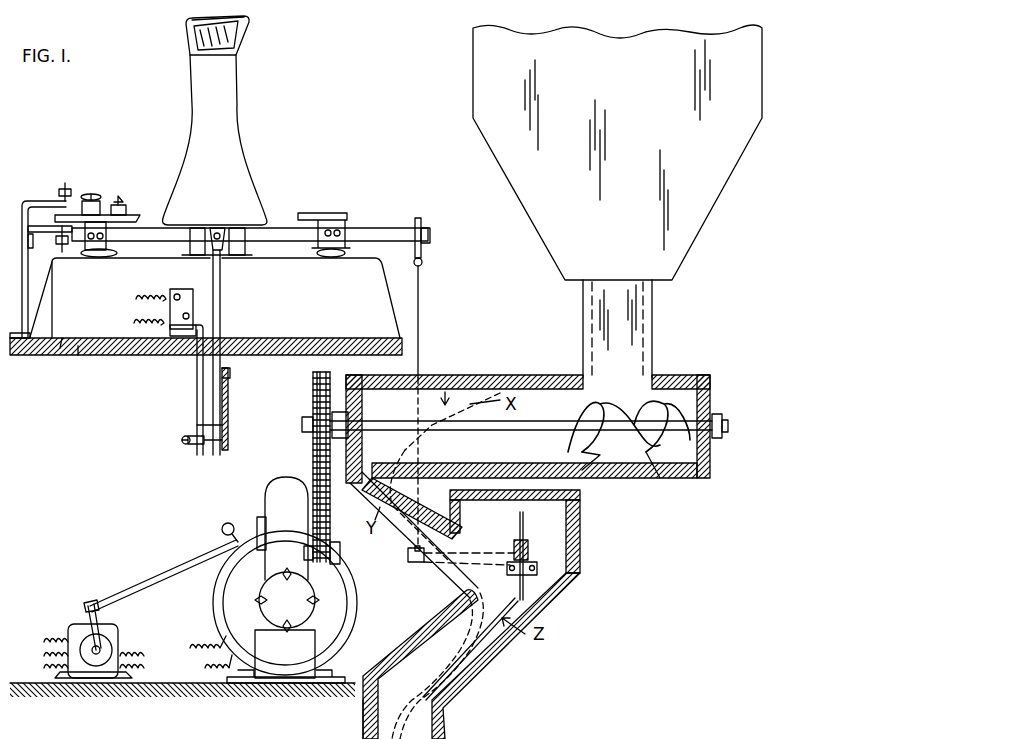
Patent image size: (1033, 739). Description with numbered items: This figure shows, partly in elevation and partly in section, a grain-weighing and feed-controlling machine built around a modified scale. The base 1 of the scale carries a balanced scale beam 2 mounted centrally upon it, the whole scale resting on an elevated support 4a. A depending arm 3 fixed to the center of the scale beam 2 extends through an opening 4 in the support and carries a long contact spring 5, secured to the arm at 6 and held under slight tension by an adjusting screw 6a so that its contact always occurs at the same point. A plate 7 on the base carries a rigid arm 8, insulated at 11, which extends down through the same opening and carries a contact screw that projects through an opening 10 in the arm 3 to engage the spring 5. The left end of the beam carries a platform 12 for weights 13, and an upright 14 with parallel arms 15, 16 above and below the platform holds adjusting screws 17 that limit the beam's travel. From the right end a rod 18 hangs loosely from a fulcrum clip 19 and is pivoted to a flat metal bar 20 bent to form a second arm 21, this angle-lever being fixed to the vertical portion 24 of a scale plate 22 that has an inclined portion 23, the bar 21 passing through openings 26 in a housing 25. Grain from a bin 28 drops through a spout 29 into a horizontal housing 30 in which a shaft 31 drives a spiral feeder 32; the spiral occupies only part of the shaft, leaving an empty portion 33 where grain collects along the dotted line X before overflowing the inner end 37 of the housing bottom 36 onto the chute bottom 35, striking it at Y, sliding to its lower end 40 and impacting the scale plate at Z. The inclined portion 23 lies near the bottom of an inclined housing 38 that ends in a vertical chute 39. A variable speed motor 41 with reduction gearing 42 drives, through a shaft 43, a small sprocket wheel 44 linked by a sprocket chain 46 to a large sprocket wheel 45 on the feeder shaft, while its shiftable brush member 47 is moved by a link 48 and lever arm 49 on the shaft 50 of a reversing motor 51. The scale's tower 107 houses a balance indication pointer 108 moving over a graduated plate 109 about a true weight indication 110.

The base of scale 1 is at (60, 348).
The scale beam 2 is at (273, 232).
The depending arm 3 is at (221, 304).
The opening 4 is at (236, 340).
The elevated support 4a is at (80, 355).
The contact spring 5 is at (229, 420).
The securing point of spring 6 is at (231, 372).
The adjusting screw 6a is at (200, 450).
The plate 7 is at (182, 290).
The rigid arm 8 is at (197, 380).
The opening in arm 10 is at (205, 425).
The insulation 11 is at (170, 338).
The platform 12 is at (130, 214).
The weights 13 is at (108, 200).
The upright 14 is at (25, 312).
The upper arm of upright 15 is at (42, 203).
The lower arm of upright 16 is at (34, 248).
The adjusting screws 17 is at (63, 185).
The rod 18 is at (420, 318).
The fulcrum clip 19 is at (420, 218).
The flat metal bar 20 is at (412, 563).
The second arm 21 is at (530, 558).
The scale plate 22 is at (545, 600).
The inclined portion 23 is at (497, 640).
The vertical portion 24 is at (524, 520).
The housing 25 is at (580, 518).
The openings 26 is at (514, 545).
The bin 28 is at (535, 218).
The spout 29 is at (595, 330).
The horizontal housing 30 is at (476, 378).
The shaft 31 is at (374, 421).
The spiral feeder 32 is at (632, 452).
The empty portion of housing 33 is at (445, 390).
The chute bottom 35 is at (360, 495).
The bottom of housing 36 is at (590, 479).
The inner end of housing bottom 37 is at (410, 470).
The inclined housing 38 is at (405, 627).
The vertical chute 39 is at (362, 732).
The lower end of incline 40 is at (470, 598).
The variable speed motor 41 is at (342, 588).
The reduction gearing 42 is at (280, 510).
The shaft of reduction gearing 43 is at (257, 525).
The small sprocket wheel 44 is at (332, 548).
The large sprocket wheel 45 is at (312, 392).
The sprocket chain 46 is at (312, 456).
The shiftable member 47 is at (221, 531).
The link 48 is at (150, 584).
The lever arm 49 is at (100, 608).
The shaft of reversing motor 50 is at (112, 648).
The reversing motor 51 is at (76, 628).
The tower 107 is at (232, 117).
The balance indication pointer 108 is at (192, 50).
The graduated plate 109 is at (240, 34).
The true weight indication 110 is at (236, 26).